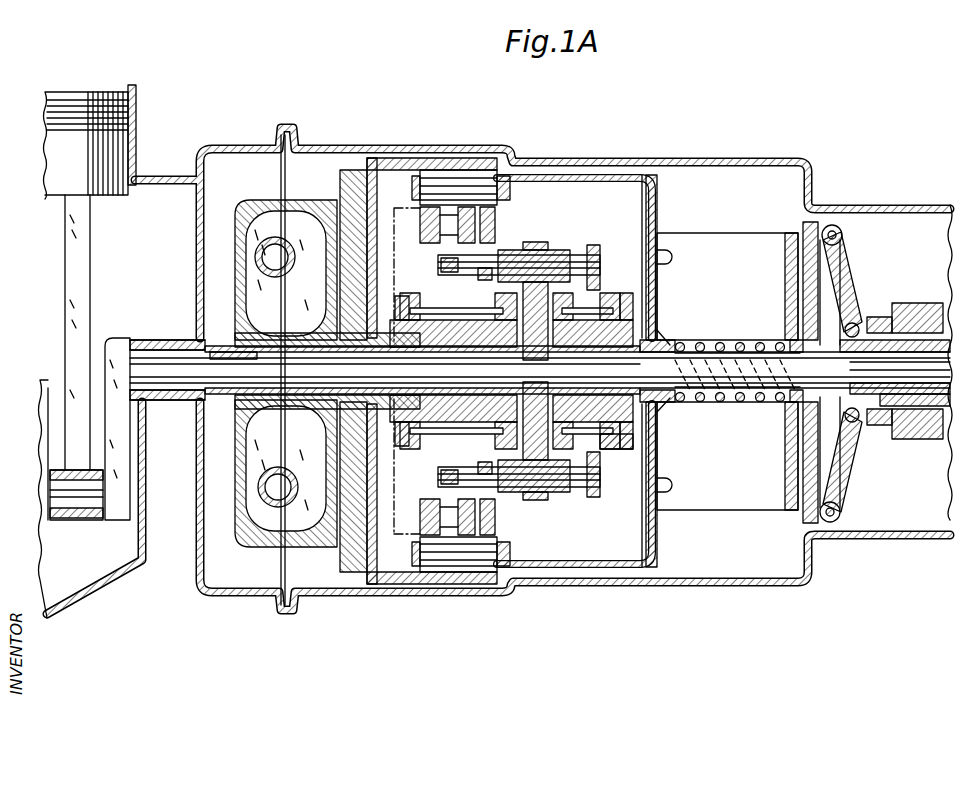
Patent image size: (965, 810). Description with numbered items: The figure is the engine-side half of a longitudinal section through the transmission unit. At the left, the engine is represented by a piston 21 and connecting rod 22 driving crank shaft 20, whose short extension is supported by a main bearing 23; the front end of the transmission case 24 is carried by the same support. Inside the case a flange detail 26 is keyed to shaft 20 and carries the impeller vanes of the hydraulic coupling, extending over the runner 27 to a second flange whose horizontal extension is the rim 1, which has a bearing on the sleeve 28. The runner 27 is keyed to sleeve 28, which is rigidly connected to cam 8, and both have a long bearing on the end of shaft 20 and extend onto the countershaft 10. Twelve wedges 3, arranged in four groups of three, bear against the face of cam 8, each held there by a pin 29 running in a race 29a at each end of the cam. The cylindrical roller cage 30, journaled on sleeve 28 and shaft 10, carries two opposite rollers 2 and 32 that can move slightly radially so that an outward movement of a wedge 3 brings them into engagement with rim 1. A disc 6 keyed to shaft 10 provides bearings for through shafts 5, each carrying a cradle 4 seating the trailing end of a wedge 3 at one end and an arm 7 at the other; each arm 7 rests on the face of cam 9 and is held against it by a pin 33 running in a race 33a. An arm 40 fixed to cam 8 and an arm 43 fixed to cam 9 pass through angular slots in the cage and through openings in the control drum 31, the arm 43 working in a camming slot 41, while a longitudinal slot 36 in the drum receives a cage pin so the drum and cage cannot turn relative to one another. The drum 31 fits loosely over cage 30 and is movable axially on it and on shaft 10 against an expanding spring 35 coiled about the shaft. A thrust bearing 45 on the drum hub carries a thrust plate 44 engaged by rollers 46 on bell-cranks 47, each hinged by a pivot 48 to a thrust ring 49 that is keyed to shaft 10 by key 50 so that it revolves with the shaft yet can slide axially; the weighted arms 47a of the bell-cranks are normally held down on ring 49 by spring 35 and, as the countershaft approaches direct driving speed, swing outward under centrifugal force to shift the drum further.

The rim 1 is at (372, 158).
The roller 2 is at (437, 170).
The wedge 3 is at (493, 222).
The cradle 4 is at (443, 268).
The through shaft 5 is at (560, 258).
The disc 6 is at (536, 245).
The arm 7 is at (588, 250).
The cam 8 is at (473, 347).
The cam 9 is at (585, 347).
The countershaft 10 is at (722, 380).
The crank shaft 20 is at (150, 340).
The piston 21 is at (100, 90).
The connecting rod 22 is at (92, 292).
The main bearing 23 is at (180, 340).
The transmission case 24 is at (222, 145).
The flange detail 26 is at (240, 455).
The runner 27 is at (282, 548).
The sleeve 28 is at (541, 362).
The pin 29 is at (403, 296).
The race 29a is at (398, 300).
The roller cage 30 is at (520, 176).
The control drum 31 is at (702, 257).
The roller 32 is at (445, 560).
The pin 33 is at (606, 298).
The race 33a is at (652, 305).
The expanding spring 35 is at (722, 341).
The longitudinal slot 36 is at (668, 250).
The arm 40 is at (398, 440).
The camming slot 41 is at (664, 328).
The arm 43 is at (606, 450).
The thrust plate 44 is at (813, 226).
The thrust bearing 45 is at (800, 427).
The roller 46 is at (834, 228).
The bell-crank 47 is at (848, 275).
The weighted arm 47a is at (915, 302).
The pivot 48 is at (858, 325).
The thrust ring 49 is at (935, 402).
The key 50 is at (912, 398).